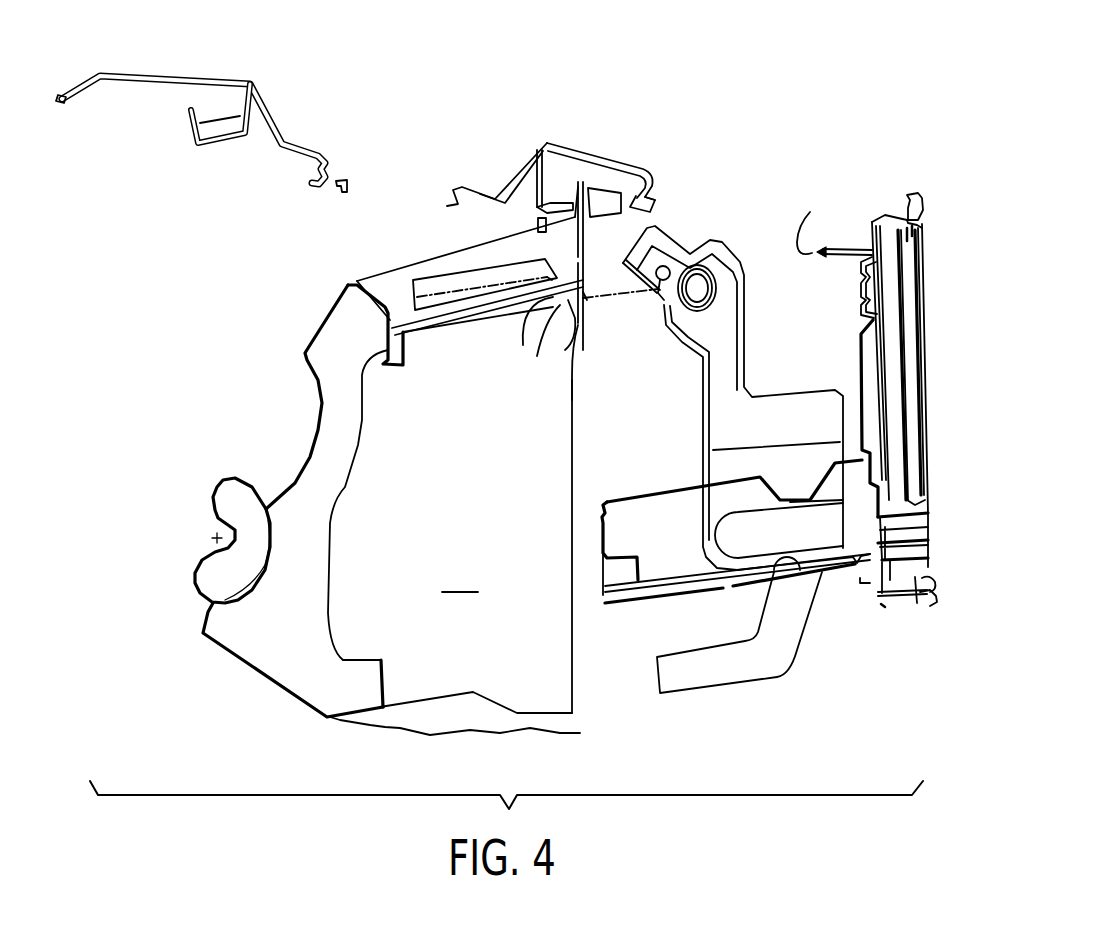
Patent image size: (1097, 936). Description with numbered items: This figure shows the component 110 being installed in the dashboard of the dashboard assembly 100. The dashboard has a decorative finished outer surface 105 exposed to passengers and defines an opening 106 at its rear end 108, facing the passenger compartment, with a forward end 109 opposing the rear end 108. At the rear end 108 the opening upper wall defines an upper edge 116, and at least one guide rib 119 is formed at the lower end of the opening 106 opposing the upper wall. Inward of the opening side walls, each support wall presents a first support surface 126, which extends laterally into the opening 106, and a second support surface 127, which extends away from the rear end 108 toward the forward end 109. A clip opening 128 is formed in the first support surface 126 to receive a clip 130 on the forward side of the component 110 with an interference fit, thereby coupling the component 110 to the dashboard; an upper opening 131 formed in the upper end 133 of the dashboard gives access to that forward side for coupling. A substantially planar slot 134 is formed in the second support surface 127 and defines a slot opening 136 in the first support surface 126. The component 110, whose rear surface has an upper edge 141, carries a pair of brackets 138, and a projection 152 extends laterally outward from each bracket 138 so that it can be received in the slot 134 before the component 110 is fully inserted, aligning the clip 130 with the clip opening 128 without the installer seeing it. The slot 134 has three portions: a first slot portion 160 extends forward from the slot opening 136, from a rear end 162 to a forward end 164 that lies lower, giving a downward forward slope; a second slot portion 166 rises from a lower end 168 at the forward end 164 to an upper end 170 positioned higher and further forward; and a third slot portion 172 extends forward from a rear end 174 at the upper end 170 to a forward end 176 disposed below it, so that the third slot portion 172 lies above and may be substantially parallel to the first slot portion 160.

The dashboard assembly 100 is at (815, 40).
The decorative finished outer surface 105 is at (597, 156).
The opening 106 is at (594, 498).
The rear end 108 is at (644, 172).
The forward end 109 is at (62, 97).
The component 110 is at (920, 197).
The upper edge 116 is at (660, 199).
The guide rib 119 is at (426, 706).
The first support surface 126 is at (580, 390).
The second support surface 127 is at (386, 501).
The clip opening 128 is at (584, 256).
The clip 130 is at (831, 219).
The upper opening 131 is at (340, 157).
The upper end 133 is at (178, 73).
The slot 134 is at (468, 308).
The slot opening 136 is at (588, 298).
The bracket 138 is at (730, 243).
The upper edge 141 is at (906, 192).
The projection 152 is at (708, 297).
The first slot portion 160 is at (567, 317).
The rear end 162 is at (588, 298).
The forward end 164 is at (547, 337).
The second slot portion 166 is at (551, 282).
The lower end 168 is at (550, 320).
The upper end 170 is at (555, 279).
The third slot portion 172 is at (441, 291).
The rear end 174 is at (552, 307).
The forward end 176 is at (445, 290).